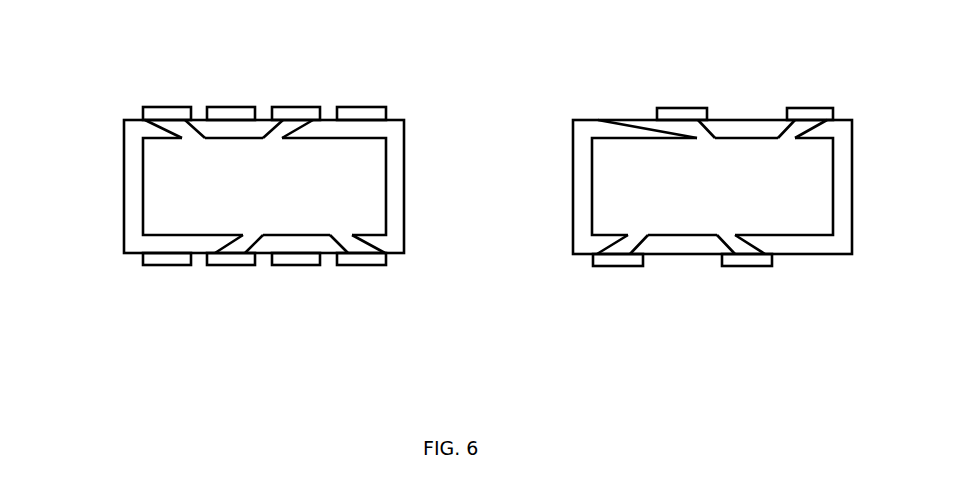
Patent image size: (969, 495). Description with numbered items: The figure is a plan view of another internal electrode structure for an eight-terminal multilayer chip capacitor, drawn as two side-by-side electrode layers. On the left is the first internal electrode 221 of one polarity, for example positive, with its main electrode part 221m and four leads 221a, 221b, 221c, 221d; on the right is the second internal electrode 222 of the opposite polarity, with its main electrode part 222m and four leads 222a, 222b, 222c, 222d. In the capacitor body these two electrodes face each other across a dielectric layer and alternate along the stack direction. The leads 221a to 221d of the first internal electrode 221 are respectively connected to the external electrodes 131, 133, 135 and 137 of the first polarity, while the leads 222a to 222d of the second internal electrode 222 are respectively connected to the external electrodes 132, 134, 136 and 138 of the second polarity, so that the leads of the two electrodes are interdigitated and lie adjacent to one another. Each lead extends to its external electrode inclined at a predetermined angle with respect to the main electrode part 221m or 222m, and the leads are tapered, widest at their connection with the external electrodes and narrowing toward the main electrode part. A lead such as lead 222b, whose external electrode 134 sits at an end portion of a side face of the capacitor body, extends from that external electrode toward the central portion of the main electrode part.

The first internal electrode 221 is at (175, 199).
The main electrode part of first internal electrode 221m is at (158, 217).
The lead of first internal electrode 221a is at (172, 128).
The lead of first internal electrode 221b is at (294, 126).
The lead of first internal electrode 221c is at (363, 247).
The lead of first internal electrode 221d is at (232, 246).
The second internal electrode 222 is at (624, 189).
The main electrode part of second internal electrode 222m is at (617, 217).
The lead of second internal electrode 222a is at (683, 125).
The lead of second internal electrode 222b is at (818, 125).
The lead of second internal electrode 222c is at (750, 243).
The lead of second internal electrode 222d is at (613, 243).
The external electrode 131 is at (157, 110).
The external electrode 132 is at (222, 110).
The external electrode 133 is at (288, 110).
The external electrode 134 is at (373, 110).
The external electrode 135 is at (362, 265).
The external electrode 136 is at (295, 265).
The external electrode 137 is at (238, 265).
The external electrode 138 is at (155, 265).